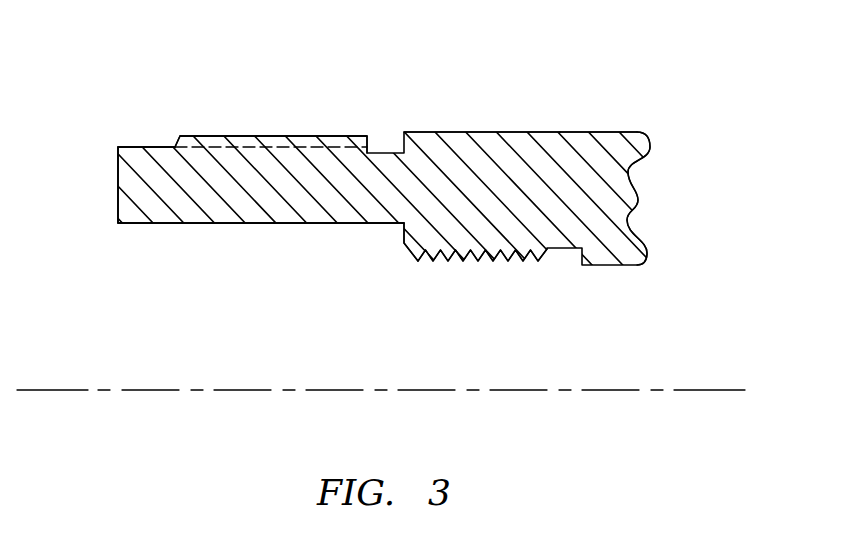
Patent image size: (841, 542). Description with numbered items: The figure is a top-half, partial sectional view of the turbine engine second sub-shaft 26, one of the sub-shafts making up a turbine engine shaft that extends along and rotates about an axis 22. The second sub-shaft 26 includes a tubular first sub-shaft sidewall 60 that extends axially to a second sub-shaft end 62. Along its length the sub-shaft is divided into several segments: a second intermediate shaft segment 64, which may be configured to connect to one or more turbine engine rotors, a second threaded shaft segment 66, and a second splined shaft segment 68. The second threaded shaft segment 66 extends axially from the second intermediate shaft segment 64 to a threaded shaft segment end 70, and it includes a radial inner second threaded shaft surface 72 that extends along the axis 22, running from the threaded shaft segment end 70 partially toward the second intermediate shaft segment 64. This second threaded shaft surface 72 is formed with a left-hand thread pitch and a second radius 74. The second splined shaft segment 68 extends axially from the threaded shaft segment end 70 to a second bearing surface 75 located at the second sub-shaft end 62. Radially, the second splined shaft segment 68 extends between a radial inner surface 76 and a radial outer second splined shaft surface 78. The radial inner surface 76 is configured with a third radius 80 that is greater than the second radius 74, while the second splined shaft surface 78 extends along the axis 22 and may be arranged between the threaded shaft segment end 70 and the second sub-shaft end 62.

The axis 22 is at (60, 391).
The turbine engine second sub-shaft 26 is at (663, 72).
The first sub-shaft sidewall 60 is at (618, 131).
The second sub-shaft end 62 is at (118, 188).
The second intermediate shaft segment 64 is at (612, 108).
The second threaded shaft segment 66 is at (485, 118).
The second splined shaft segment 68 is at (172, 98).
The threaded shaft segment end 70 is at (401, 236).
The second threaded shaft surface 72 is at (462, 259).
The second radius 74 is at (524, 262).
The second bearing surface 75 is at (118, 162).
The radial inner surface 76 is at (236, 223).
The second splined shaft surface 78 is at (263, 136).
The third radius 80 is at (166, 223).